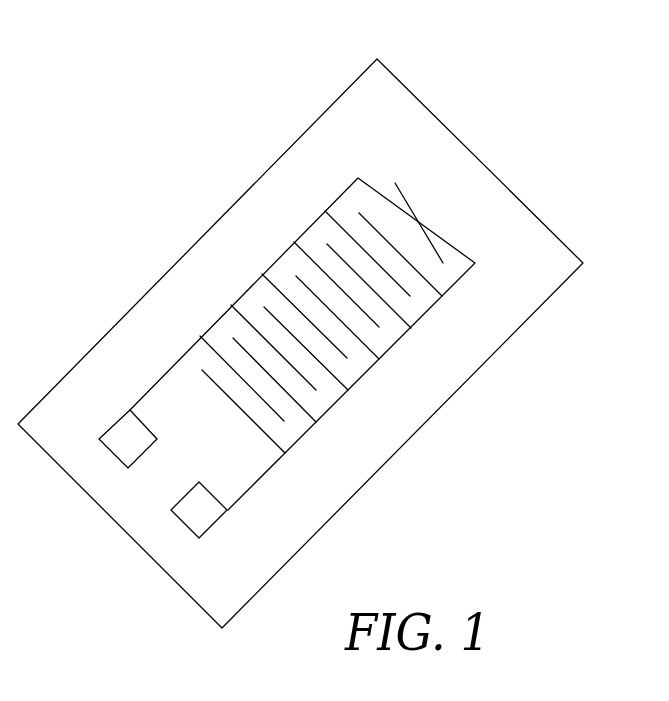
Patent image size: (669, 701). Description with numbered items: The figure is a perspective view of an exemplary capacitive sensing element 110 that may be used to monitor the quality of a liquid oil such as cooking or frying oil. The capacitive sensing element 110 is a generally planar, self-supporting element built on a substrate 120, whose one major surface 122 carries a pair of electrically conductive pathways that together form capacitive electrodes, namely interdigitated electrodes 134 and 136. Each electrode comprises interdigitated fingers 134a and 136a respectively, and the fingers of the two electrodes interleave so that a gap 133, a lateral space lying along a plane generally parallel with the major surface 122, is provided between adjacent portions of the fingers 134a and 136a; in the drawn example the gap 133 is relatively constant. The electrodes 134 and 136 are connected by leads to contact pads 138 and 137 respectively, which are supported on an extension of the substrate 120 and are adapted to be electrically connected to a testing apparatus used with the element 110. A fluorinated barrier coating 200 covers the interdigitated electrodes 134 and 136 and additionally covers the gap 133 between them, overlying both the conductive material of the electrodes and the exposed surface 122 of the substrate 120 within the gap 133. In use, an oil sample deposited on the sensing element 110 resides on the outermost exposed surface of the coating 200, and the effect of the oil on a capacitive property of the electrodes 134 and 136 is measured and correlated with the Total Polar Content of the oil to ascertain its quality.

The capacitive sensing element 110 is at (176, 128).
The substrate 120 is at (435, 158).
The major surface 122 is at (508, 207).
The interdigitated electrode 134 is at (429, 307).
The interdigitated fingers 134a is at (307, 407).
The interdigitated electrode 136 is at (337, 198).
The interdigitated fingers 136a is at (240, 303).
The fluorinated barrier coating 200 is at (372, 213).
The gap 133 is at (292, 348).
The contact pad 137 is at (123, 442).
The contact pad 138 is at (195, 513).